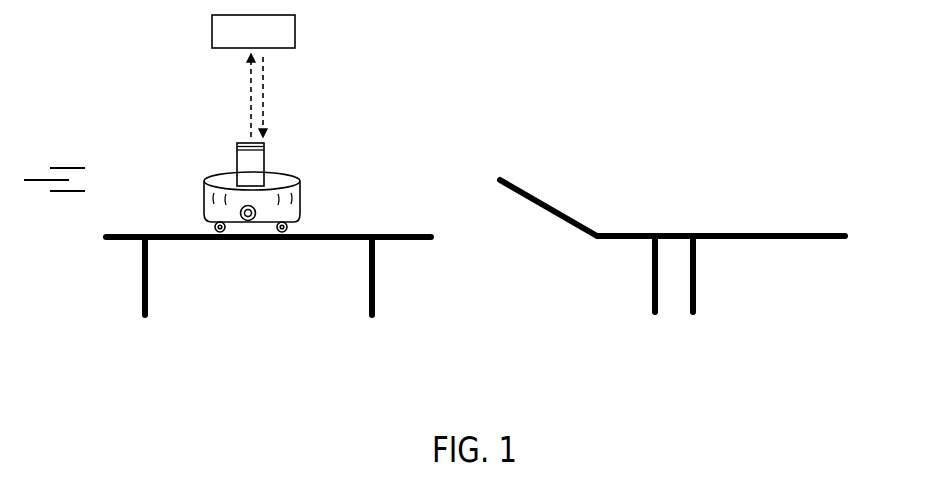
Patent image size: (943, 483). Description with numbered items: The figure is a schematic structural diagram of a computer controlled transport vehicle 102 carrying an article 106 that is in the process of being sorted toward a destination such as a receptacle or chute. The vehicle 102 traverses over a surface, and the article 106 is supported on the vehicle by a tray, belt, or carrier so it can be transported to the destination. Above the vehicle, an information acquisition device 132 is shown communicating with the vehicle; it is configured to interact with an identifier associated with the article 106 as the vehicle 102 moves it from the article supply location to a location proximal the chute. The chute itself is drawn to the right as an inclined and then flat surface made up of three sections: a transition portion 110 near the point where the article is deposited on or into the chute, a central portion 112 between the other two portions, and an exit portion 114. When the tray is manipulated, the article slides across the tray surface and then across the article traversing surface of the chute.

The computer controlled transport vehicle 102 is at (204, 205).
The article 106 is at (237, 158).
The transition portion 110 is at (569, 197).
The central portion 112 is at (638, 223).
The exit portion 114 is at (833, 225).
The information acquisition device 132 is at (212, 26).